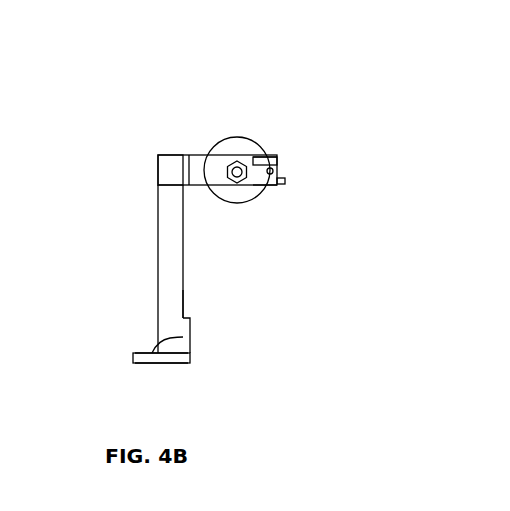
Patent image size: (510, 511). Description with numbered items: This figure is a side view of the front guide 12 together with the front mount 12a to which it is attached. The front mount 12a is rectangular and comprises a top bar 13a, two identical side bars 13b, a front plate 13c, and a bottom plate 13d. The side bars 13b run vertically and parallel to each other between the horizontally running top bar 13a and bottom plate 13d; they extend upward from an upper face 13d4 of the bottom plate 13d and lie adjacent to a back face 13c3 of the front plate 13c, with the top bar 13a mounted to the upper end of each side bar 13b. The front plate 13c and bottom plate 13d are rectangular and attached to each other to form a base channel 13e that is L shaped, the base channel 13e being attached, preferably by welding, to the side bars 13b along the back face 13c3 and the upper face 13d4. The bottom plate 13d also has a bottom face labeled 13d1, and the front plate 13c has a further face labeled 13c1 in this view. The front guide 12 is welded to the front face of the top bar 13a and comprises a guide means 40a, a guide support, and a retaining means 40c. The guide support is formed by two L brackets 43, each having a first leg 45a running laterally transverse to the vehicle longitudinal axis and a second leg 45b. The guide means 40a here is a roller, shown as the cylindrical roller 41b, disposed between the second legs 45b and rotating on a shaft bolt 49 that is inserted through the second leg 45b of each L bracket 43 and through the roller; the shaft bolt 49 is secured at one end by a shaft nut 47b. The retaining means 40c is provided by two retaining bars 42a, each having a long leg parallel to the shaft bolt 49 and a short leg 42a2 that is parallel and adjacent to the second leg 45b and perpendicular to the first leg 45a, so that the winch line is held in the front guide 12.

The front guide 12 is at (283, 137).
The front mount 12a is at (97, 182).
The top bar 13a is at (157, 173).
The side bar 13b is at (157, 253).
The front plate 13c is at (178, 332).
The projection inner surface 13c1 is at (190, 337).
The back face 13c3 is at (181, 303).
The bottom plate 13d is at (146, 352).
The base plate bottom surface 13d1 is at (165, 364).
The upper face 13d4 is at (190, 350).
The base channel 13e is at (120, 296).
The guide means 40a is at (238, 50).
The retaining means 40c is at (383, 152).
The cylindrical roller 41b is at (240, 135).
The retaining bar 42a is at (279, 162).
The short leg 42a2 is at (265, 156).
The L bracket 43 is at (283, 262).
The first leg 45a is at (191, 181).
The second leg 45b is at (260, 180).
The shaft nut 47b is at (227, 167).
The shaft bolt 49 is at (231, 161).